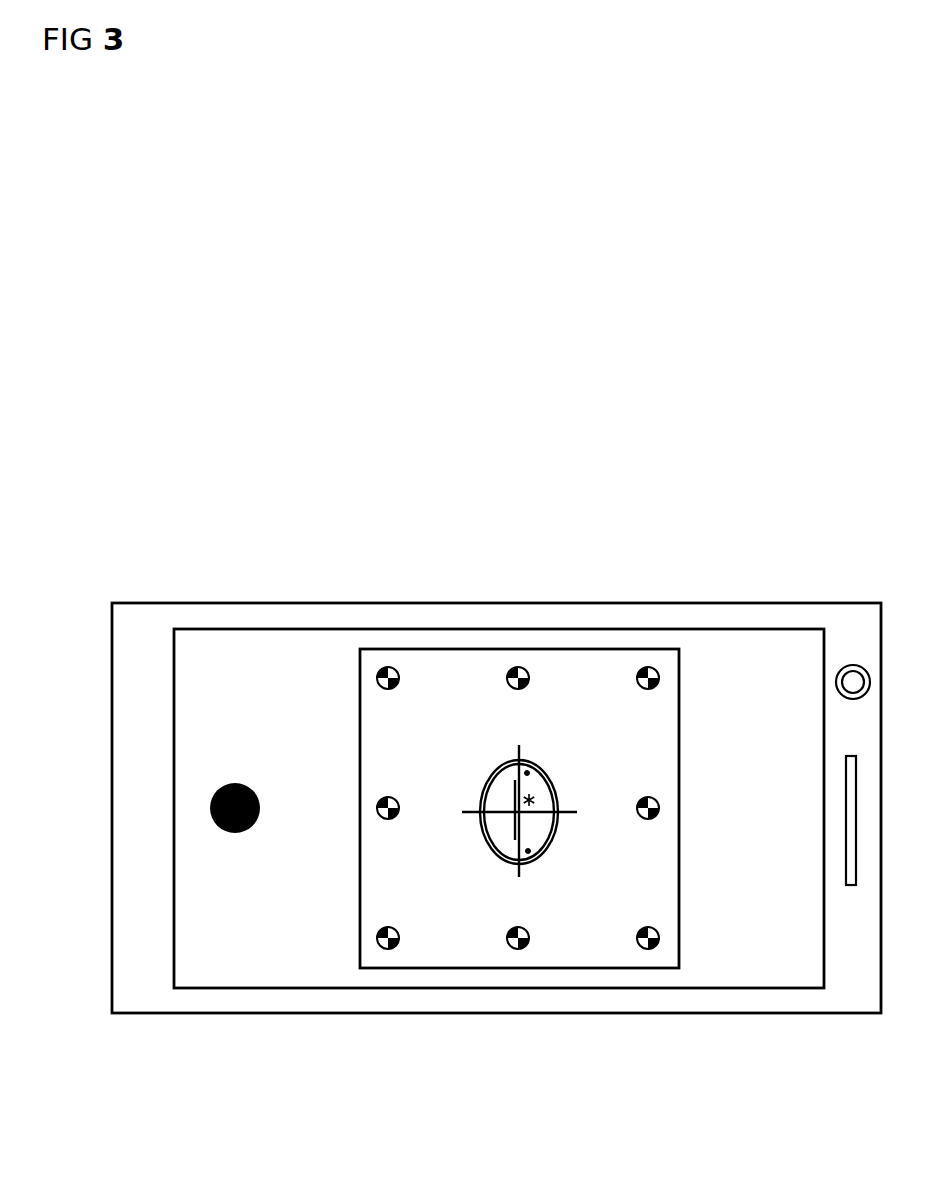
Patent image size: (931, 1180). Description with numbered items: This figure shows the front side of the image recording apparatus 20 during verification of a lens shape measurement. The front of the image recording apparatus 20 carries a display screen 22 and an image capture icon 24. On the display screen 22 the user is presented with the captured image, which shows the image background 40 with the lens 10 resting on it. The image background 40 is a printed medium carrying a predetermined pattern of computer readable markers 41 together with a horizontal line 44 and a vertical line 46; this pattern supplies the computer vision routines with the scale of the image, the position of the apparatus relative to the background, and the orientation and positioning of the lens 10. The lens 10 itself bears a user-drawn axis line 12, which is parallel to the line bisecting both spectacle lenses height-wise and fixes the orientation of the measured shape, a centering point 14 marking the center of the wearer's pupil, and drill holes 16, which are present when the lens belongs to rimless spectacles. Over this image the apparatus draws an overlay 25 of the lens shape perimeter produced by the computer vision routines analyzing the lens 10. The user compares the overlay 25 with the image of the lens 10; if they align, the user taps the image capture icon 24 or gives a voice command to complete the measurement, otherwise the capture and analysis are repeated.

The lens 10 is at (528, 852).
The axis line 12 is at (515, 840).
The centering point 14 is at (522, 796).
The drill holes 16 is at (533, 768).
The image recording apparatus 20 is at (515, 603).
The display screen 22 is at (217, 650).
The image capture icon 24 is at (210, 807).
The overlay 25 is at (480, 815).
The image background 40 is at (636, 968).
The computer readable markers 41 is at (648, 668).
The horizontal line 44 is at (518, 758).
The vertical line 46 is at (565, 808).